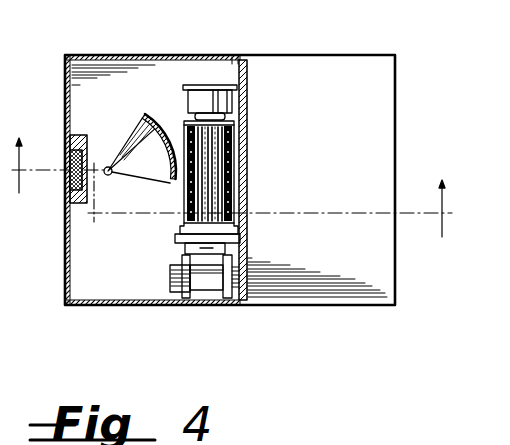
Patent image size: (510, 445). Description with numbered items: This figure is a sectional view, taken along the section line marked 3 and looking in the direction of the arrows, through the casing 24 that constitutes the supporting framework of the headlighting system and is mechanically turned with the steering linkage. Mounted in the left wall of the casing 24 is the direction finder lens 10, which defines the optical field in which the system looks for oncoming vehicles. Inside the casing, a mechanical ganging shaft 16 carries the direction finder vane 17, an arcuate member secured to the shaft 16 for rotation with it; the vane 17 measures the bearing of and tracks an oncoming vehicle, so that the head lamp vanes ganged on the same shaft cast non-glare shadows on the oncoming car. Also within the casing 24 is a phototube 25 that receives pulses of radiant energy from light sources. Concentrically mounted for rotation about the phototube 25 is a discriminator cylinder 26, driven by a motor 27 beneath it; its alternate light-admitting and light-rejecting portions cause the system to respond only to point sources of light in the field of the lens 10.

The section line 3- 3 is at (232, 187).
The direction finder lens 10 is at (73, 176).
The mechanical ganging means or shaft 16 is at (109, 176).
The direction finder vane 17 is at (163, 150).
The casing 24 is at (194, 50).
The phototube 25 is at (235, 163).
The discriminator cylinder 26 is at (222, 117).
The motor 27 is at (202, 281).